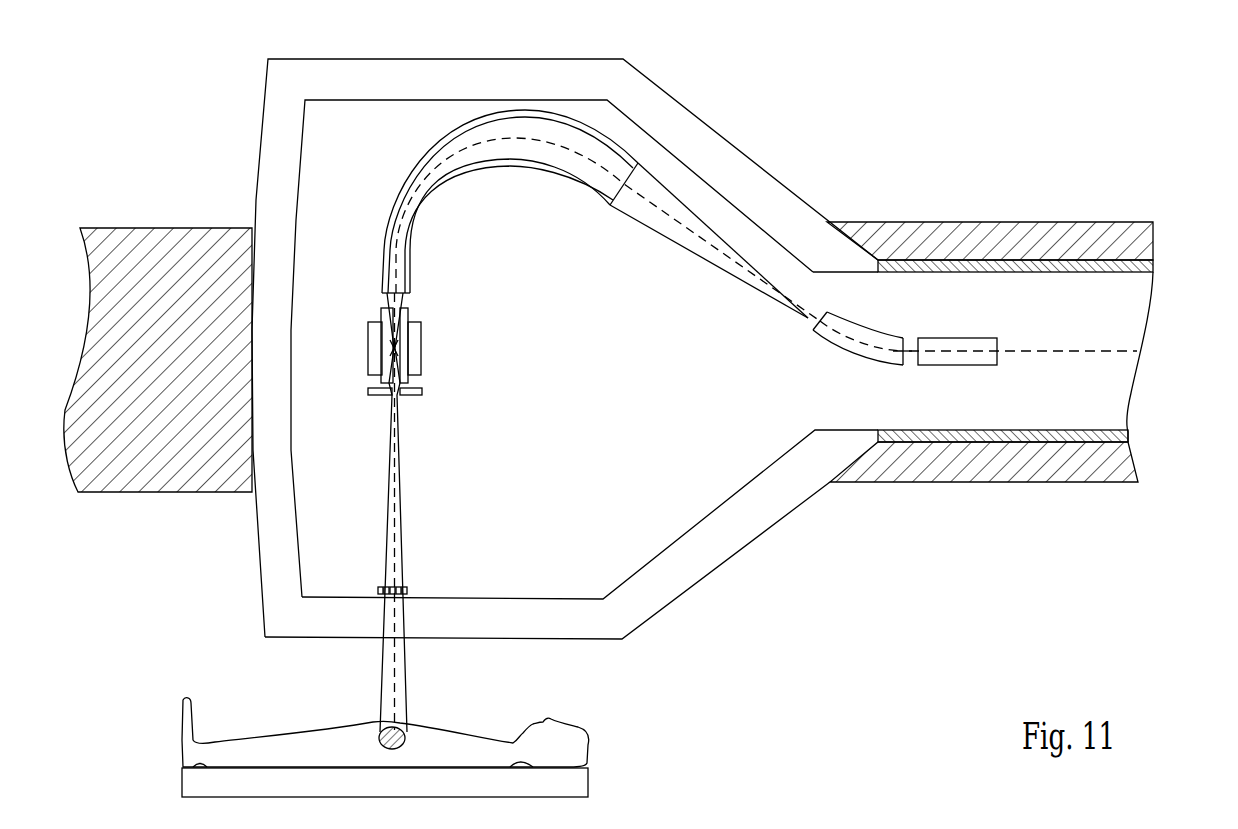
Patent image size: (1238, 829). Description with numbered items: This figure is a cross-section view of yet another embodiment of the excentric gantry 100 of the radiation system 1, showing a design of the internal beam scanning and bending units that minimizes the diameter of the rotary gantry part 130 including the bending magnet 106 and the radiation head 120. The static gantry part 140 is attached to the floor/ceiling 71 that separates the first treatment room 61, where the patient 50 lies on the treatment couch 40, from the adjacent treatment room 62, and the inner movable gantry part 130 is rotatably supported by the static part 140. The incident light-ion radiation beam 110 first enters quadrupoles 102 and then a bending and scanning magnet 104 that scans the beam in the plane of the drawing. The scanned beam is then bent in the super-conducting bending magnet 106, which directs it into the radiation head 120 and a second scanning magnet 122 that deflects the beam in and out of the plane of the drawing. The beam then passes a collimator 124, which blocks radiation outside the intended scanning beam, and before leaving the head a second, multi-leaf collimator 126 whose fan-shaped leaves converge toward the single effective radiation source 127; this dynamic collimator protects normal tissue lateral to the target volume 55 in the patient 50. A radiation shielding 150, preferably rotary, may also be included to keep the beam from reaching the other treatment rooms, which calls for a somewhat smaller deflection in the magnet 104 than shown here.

The radiation system 1 is at (723, 88).
The treatment couch 40 is at (182, 775).
The patient 50 is at (182, 730).
The target volume 55 is at (417, 724).
The first treatment room 61 is at (660, 706).
The treatment room 62 is at (157, 98).
The floor/ceiling 71 is at (190, 493).
The gantry 100 is at (600, 335).
The quadrupoles 102 is at (958, 337).
The bending and scanning magnet 104 is at (863, 322).
The bending magnet 106 is at (427, 150).
The radiation beam 110 is at (385, 682).
The radiation head 120 is at (572, 600).
The second scanning magnet 122 is at (422, 347).
The collimator 124 is at (421, 388).
The second collimator 126 is at (405, 585).
The effective radiation source 127 is at (392, 337).
The movable gantry part 130 is at (1130, 386).
The static gantry part 140 is at (1130, 433).
The radiation shielding 150 is at (273, 157).